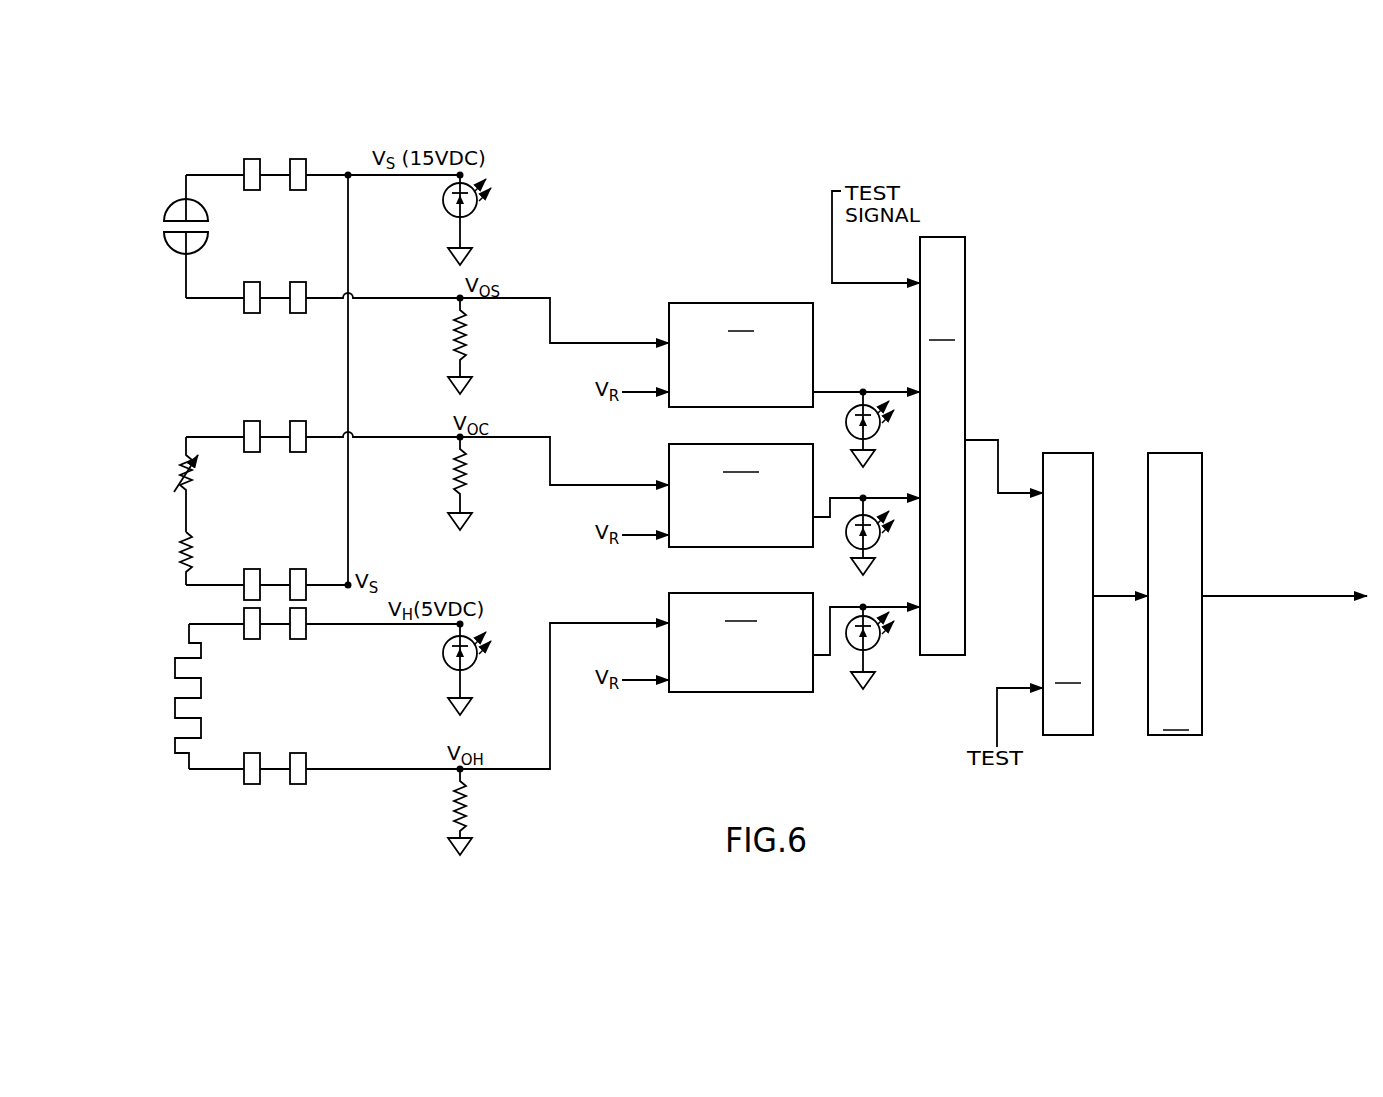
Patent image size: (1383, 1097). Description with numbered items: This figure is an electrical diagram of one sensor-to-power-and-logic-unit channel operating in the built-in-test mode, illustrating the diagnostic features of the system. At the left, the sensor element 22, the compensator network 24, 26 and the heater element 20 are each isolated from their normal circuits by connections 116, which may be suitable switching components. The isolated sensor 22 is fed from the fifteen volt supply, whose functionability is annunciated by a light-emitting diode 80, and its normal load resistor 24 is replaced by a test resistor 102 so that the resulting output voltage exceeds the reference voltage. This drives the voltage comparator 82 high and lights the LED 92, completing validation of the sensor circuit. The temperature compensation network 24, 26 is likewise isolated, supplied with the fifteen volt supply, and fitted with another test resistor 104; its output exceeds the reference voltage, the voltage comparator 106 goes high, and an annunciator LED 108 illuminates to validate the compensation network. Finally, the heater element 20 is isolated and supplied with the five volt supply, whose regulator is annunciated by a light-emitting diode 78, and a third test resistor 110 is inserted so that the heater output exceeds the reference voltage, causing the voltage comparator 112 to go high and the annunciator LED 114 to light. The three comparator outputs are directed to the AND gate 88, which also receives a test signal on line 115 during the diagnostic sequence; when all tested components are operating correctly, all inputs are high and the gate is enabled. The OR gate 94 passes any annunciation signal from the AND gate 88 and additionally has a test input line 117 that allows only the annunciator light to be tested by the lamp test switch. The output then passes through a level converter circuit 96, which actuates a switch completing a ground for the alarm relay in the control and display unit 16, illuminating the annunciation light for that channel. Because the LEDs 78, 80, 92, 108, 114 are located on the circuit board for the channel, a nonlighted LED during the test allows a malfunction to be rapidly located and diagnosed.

The connections 116 is at (262, 162).
The sensor element 22 is at (210, 213).
The light-emitting diode 80 is at (478, 212).
The test resistor 102 is at (466, 322).
The compensator network 26 is at (198, 477).
The load resistor 24 is at (192, 537).
The test resistor 104 is at (468, 488).
The heater element 20 is at (201, 682).
The light-emitting diode 78 is at (477, 663).
The test resistor 110 is at (466, 790).
The voltage comparator 82 is at (741, 355).
The voltage comparator 106 is at (741, 495).
The voltage comparator 112 is at (741, 642).
The AND gate 88 is at (942, 446).
The line 115 is at (832, 226).
The LED 92 is at (846, 422).
The annunciator LED 108 is at (850, 546).
The annunciator LED 114 is at (876, 655).
The OR gate 94 is at (1068, 594).
The test input line 117 is at (997, 716).
The level converter circuit 96 is at (1175, 594).
The control and display unit 16 is at (1284, 595).